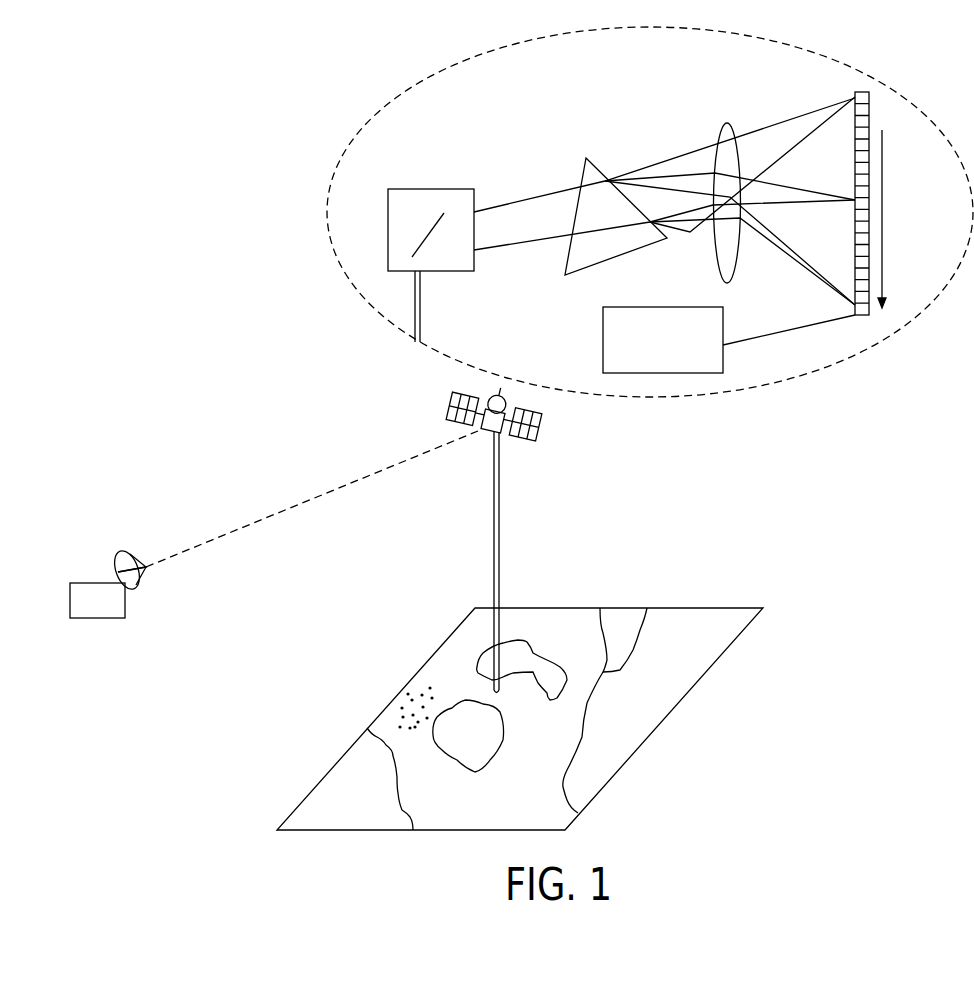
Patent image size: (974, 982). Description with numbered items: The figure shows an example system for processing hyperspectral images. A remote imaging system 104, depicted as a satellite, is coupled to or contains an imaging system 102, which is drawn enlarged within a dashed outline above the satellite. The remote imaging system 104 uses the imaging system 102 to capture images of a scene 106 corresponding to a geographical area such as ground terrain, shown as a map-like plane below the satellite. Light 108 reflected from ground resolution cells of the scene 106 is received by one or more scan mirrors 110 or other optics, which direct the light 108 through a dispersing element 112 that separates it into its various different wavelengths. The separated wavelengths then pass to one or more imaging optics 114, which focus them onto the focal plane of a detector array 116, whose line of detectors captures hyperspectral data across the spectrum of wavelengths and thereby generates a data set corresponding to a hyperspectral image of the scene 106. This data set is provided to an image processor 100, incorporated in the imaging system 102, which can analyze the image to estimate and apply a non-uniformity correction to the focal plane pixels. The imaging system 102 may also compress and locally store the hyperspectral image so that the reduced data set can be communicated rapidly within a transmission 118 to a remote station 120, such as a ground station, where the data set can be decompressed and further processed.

The image processor 100 is at (603, 338).
The imaging system 102 is at (808, 380).
The remote imaging system 104 is at (543, 437).
The scene 106 is at (377, 720).
The light 108 is at (422, 310).
The scan mirror 110 is at (432, 188).
The dispersing element 112 is at (598, 160).
The imaging optics 114 is at (728, 125).
The detector array 116 is at (862, 91).
The transmission 118 is at (300, 502).
The remote station 120 is at (84, 582).